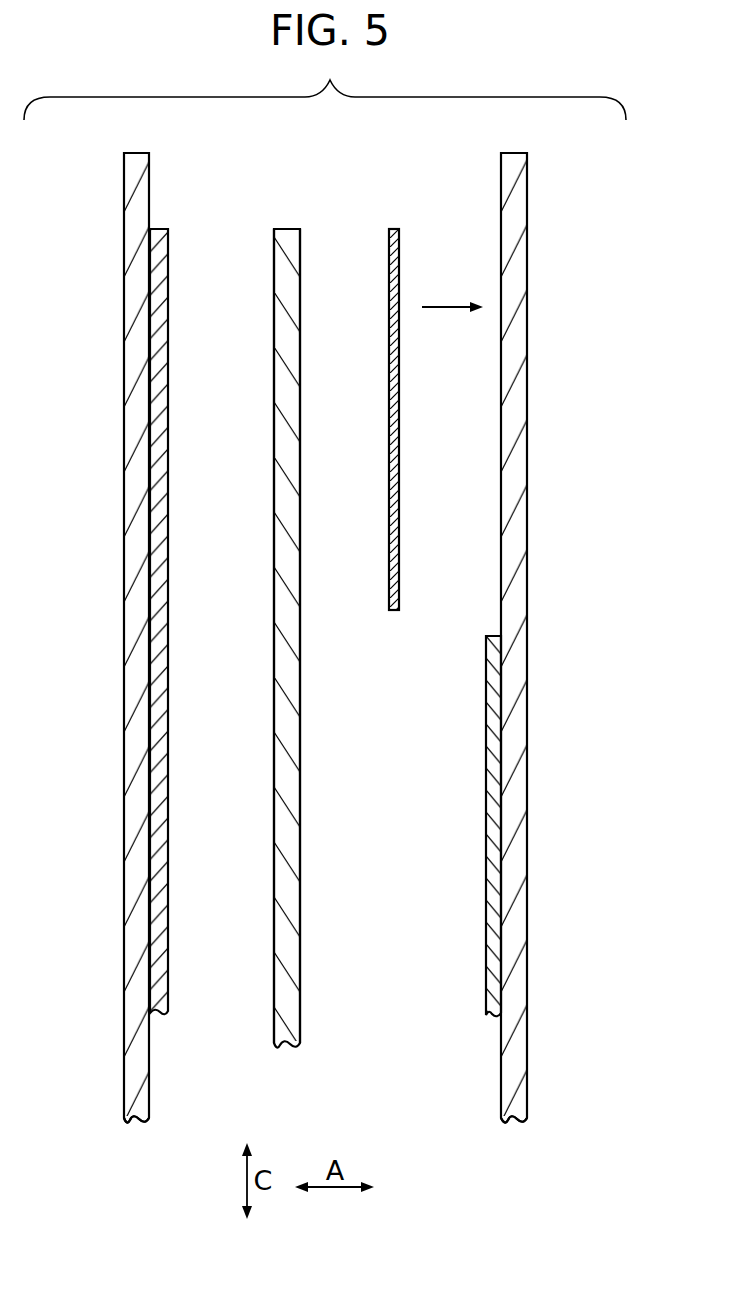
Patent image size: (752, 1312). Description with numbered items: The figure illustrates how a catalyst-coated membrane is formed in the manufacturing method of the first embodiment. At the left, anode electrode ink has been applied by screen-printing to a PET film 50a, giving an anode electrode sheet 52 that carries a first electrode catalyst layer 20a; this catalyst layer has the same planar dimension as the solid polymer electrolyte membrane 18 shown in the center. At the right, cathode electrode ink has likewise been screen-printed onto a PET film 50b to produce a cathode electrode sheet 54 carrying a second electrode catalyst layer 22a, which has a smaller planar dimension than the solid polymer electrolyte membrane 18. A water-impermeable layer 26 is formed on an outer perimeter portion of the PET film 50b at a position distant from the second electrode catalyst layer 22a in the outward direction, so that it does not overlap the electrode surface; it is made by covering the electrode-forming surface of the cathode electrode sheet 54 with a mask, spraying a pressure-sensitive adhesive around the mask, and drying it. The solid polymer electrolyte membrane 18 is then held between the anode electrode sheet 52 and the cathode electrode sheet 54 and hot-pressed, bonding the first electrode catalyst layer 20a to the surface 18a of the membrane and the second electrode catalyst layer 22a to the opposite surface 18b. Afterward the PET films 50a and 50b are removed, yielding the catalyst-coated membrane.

The solid polymer electrolyte membrane 18 is at (287, 678).
The surface of the solid polymer electrolyte membrane 18a is at (273, 930).
The surface of the solid polymer electrolyte membrane 18b is at (300, 902).
The first electrode catalyst layer 20a is at (160, 537).
The second electrode catalyst layer 22a is at (486, 855).
The water-impermeable layer 26 is at (399, 443).
The PET film 50a is at (128, 378).
The PET film 50b is at (520, 378).
The anode electrode sheet 52 is at (134, 1125).
The cathode electrode sheet 54 is at (512, 1125).